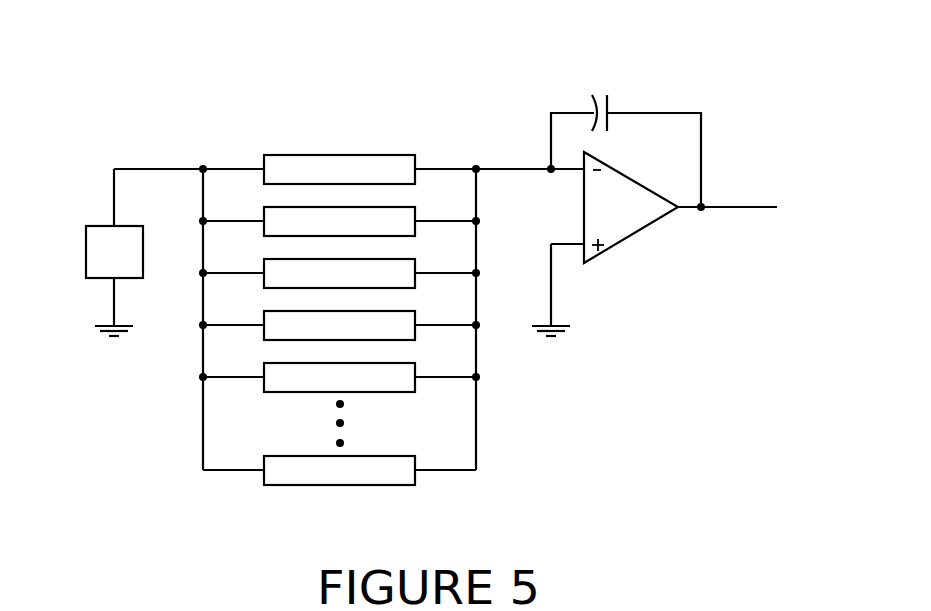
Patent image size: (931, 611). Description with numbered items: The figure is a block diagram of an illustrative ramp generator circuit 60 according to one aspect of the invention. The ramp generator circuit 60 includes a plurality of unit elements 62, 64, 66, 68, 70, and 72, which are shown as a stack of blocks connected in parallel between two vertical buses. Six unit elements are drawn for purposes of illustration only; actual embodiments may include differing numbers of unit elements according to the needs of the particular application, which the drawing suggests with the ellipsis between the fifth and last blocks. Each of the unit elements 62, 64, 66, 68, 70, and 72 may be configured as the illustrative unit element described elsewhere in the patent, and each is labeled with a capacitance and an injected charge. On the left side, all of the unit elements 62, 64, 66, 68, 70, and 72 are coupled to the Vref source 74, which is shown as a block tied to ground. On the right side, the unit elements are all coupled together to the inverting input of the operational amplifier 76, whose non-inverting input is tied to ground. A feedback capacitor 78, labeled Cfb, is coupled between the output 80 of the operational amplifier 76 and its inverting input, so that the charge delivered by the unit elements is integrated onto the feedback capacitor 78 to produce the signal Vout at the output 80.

The ramp generator circuit 60 is at (484, 95).
The unit element 62 is at (262, 153).
The unit element 64 is at (262, 205).
The unit element 66 is at (262, 257).
The unit element 68 is at (262, 309).
The unit element 70 is at (262, 361).
The unit element 72 is at (262, 454).
The Vref source 74 is at (78, 260).
The operational amplifier 76 is at (633, 240).
The feedback capacitor 78 is at (612, 124).
The output 80 is at (750, 205).